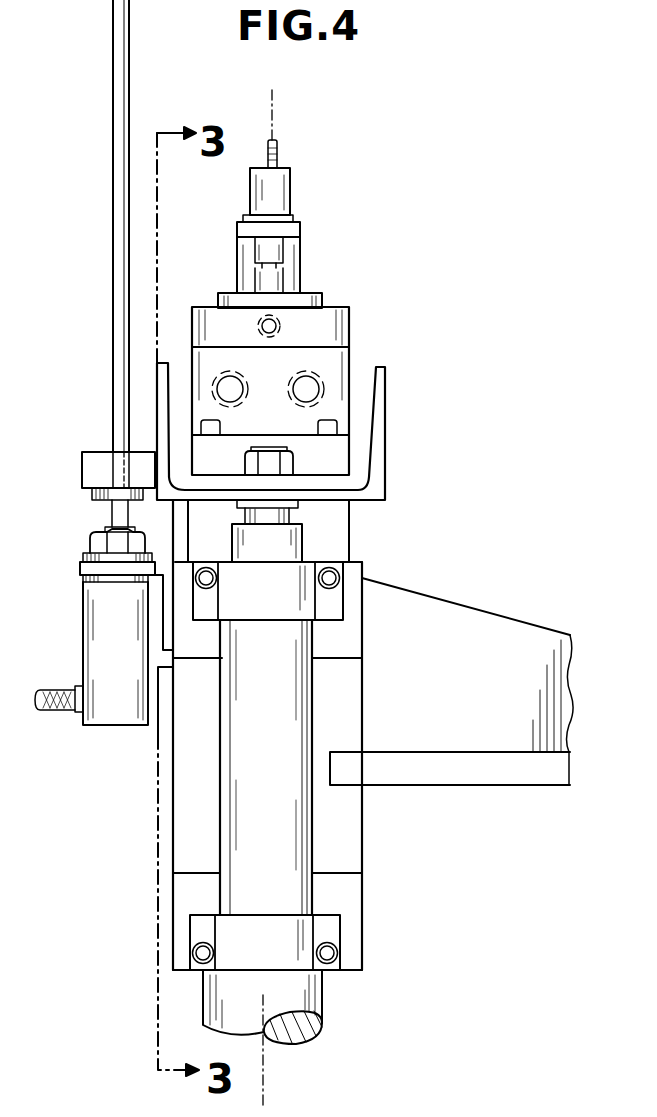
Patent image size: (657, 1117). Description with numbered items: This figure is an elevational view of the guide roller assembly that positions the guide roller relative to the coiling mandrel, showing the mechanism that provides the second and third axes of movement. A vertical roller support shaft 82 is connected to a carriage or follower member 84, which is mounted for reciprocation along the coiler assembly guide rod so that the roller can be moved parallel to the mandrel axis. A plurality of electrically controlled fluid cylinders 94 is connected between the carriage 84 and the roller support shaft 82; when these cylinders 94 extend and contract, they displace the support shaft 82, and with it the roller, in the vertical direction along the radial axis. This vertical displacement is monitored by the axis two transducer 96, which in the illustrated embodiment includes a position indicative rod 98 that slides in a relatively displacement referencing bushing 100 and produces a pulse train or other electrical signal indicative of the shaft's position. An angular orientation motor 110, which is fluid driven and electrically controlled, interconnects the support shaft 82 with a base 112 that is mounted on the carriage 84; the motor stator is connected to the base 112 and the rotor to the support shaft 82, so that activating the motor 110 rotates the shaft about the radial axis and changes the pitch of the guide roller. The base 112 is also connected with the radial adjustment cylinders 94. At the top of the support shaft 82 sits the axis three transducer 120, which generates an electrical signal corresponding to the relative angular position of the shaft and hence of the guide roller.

The support shaft 82 is at (322, 1003).
The carriage or follower member 84 is at (418, 592).
The fluid cylinders 94 is at (312, 843).
The axis 2 transducer 96 is at (83, 625).
The position indicative rod 98 is at (113, 232).
The displacement referencing bushing 100 is at (82, 465).
The angular orientation motor 110 is at (350, 350).
The base 112 is at (385, 408).
The axis 3 transducer 120 is at (292, 190).